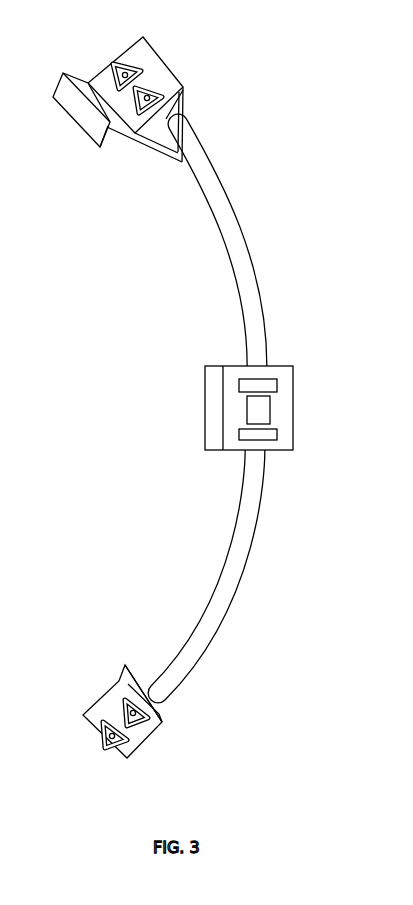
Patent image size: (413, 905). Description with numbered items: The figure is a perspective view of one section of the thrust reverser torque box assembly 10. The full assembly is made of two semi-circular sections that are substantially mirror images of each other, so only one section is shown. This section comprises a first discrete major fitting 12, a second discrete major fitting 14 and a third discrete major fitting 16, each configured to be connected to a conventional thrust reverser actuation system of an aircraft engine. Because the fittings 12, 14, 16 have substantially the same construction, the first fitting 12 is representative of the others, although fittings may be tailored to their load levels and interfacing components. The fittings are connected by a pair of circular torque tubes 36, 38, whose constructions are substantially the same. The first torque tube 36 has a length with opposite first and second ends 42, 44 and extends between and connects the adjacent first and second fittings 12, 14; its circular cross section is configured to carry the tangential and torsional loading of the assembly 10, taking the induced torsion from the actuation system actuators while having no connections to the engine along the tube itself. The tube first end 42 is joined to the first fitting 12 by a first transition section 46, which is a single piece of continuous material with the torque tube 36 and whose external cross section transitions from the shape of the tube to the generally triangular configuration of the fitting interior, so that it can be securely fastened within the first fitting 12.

The thrust reverser torque box assembly 10 is at (228, 415).
The first discrete major fitting 12 is at (164, 112).
The second discrete major fitting 14 is at (290, 389).
The third discrete major fitting 16 is at (148, 723).
The first torque tube 36 is at (232, 220).
The second torque tube 38 is at (229, 573).
The torque tube first end 42 is at (153, 133).
The torque tube second end 44 is at (268, 366).
The first transition section 46 is at (172, 108).